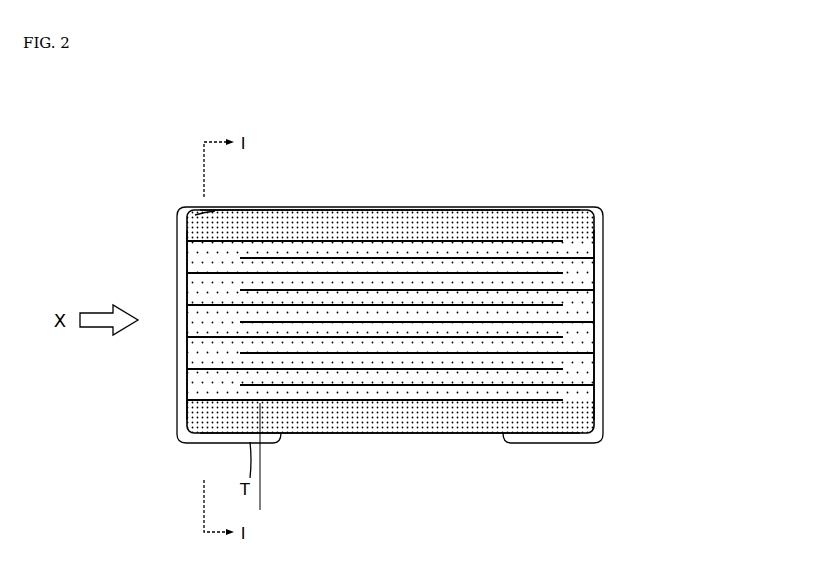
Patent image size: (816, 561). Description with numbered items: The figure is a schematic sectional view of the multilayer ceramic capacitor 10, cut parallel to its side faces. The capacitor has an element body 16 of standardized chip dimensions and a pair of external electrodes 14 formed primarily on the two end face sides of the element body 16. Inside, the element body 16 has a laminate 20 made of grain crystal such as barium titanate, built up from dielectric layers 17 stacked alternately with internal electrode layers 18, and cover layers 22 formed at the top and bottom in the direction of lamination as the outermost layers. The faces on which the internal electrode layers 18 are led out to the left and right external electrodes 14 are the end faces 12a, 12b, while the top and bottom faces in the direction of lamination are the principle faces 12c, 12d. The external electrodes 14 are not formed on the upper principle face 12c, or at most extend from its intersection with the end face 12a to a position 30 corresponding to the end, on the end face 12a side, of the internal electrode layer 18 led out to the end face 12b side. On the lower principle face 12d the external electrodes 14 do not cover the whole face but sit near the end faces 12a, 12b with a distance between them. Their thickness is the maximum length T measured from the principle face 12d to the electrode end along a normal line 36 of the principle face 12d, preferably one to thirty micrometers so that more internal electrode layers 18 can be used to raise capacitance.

The multilayer ceramic capacitor 10 is at (583, 162).
The end face 12a is at (186, 268).
The end face 12b is at (598, 275).
The principle face 12c is at (360, 209).
The principle face 12d is at (375, 434).
The external electrode 14 is at (178, 219).
The element body 16 is at (370, 107).
The dielectric layer 17 is at (452, 289).
The internal electrode layer 18 is at (520, 304).
The laminate 20 is at (390, 257).
The cover layer 22 is at (381, 209).
The position 30 is at (222, 209).
The normal line 36 is at (262, 485).